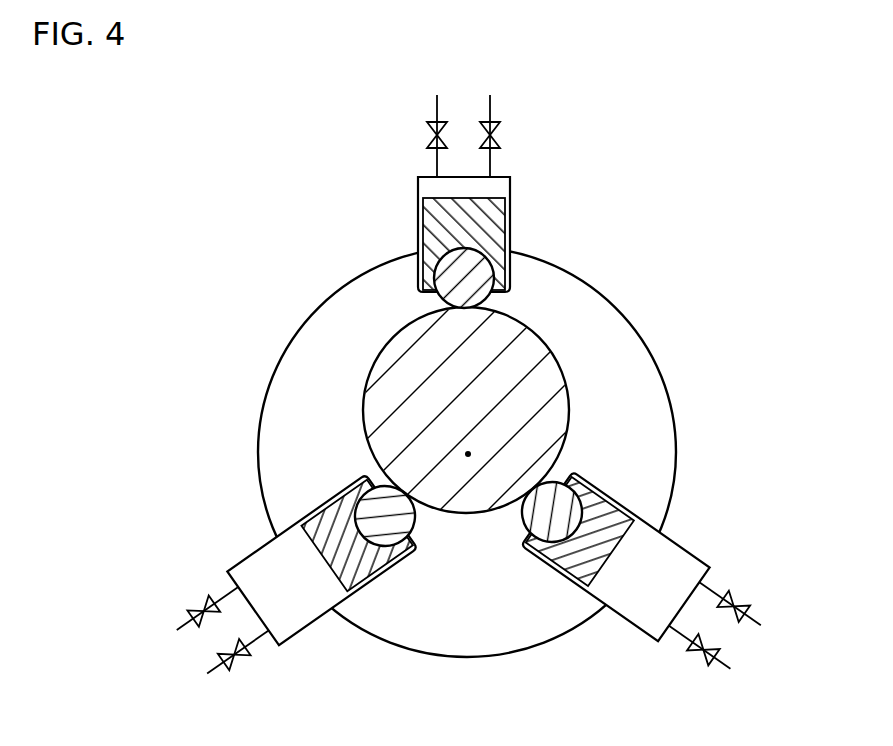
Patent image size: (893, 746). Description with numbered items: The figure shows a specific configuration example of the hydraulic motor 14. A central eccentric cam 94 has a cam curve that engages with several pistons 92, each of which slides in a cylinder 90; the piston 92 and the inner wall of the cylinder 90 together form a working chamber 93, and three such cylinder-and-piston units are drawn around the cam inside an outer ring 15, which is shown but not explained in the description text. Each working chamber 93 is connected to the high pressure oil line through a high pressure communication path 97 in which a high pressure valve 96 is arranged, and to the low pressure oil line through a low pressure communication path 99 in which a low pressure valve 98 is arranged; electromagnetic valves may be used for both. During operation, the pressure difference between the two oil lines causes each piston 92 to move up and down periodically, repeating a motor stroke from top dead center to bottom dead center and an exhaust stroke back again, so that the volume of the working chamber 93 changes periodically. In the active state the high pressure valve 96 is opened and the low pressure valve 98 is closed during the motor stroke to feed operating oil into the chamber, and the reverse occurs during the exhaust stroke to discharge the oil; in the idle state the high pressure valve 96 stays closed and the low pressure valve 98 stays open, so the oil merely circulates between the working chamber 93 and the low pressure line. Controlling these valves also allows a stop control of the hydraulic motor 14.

The hydraulic motor 14 is at (247, 262).
The annular housing 15 is at (662, 372).
The cylinder 90 is at (507, 214).
The piston 92 is at (503, 270).
The working chamber 93 is at (500, 190).
The eccentric cam 94 is at (568, 402).
The high pressure valve 96 is at (499, 135).
The high pressure communication path 97 is at (490, 100).
The low pressure valve 98 is at (428, 135).
The low pressure communication path 99 is at (437, 100).